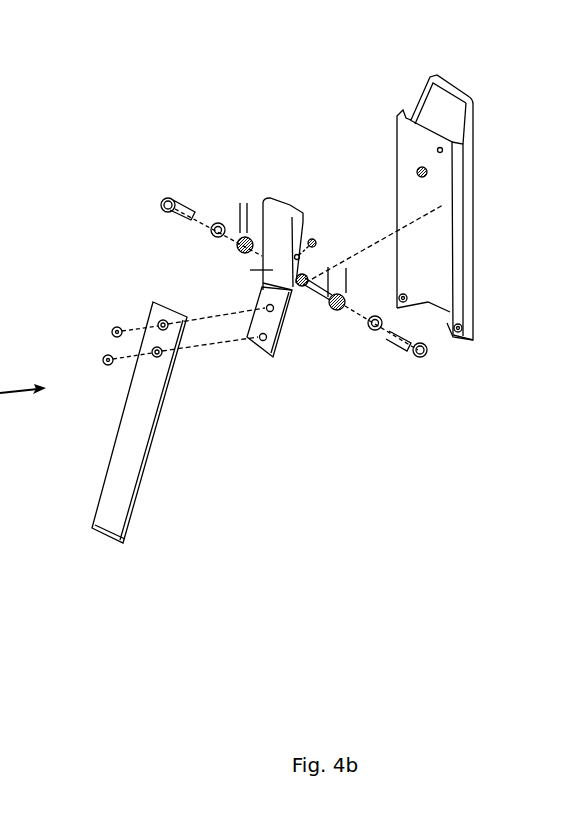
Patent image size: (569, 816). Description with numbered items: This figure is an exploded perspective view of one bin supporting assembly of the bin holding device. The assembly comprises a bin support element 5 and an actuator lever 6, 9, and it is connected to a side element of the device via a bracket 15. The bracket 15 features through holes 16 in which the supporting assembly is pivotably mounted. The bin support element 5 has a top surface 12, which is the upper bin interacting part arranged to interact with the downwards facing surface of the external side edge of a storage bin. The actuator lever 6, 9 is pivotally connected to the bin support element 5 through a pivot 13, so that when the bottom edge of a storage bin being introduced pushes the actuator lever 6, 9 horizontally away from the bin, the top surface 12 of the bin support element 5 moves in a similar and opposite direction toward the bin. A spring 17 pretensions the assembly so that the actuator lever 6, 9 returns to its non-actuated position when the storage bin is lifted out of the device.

The bin support element 5 is at (273, 270).
The actuator lever 6 is at (203, 422).
The actuator lever 9 is at (123, 477).
The top surface 12 is at (284, 208).
The pivot 13 is at (302, 286).
The bracket 15 is at (412, 150).
The through holes 16 is at (422, 173).
The spring 17 is at (333, 310).